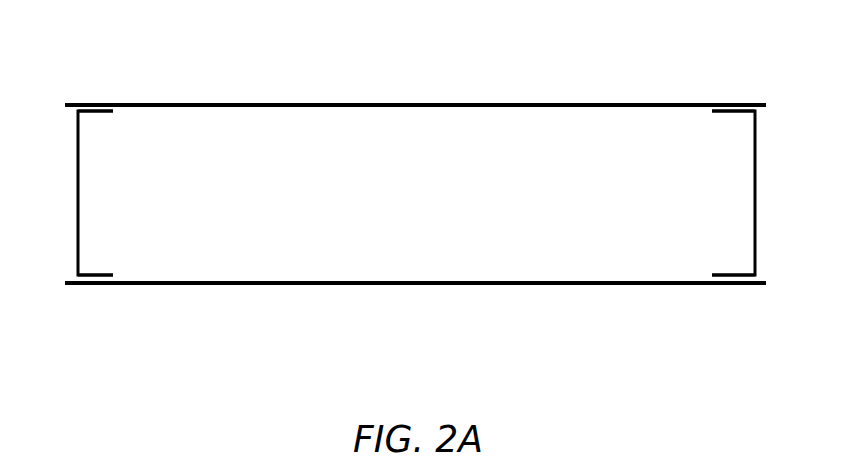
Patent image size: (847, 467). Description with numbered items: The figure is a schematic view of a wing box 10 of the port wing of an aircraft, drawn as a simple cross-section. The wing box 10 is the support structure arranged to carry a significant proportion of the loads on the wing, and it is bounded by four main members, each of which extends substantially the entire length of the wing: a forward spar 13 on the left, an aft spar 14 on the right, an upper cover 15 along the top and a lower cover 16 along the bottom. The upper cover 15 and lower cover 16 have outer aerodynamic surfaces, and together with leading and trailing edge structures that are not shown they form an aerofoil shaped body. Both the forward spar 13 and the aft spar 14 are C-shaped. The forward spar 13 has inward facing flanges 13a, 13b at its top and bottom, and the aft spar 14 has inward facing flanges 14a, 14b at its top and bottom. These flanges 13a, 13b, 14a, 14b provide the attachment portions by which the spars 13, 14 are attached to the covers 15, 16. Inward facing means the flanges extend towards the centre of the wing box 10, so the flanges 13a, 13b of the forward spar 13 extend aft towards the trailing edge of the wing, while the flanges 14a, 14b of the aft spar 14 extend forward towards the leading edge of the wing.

The wing box 10 is at (215, 303).
The forward spar 13 is at (77, 178).
The inward facing flange of forward spar 13a is at (105, 108).
The inward facing flange of forward spar 13b is at (97, 277).
The aft spar 14 is at (757, 186).
The inward facing flange of aft spar 14a is at (742, 108).
The inward facing flange of aft spar 14b is at (730, 278).
The upper cover 15 is at (433, 104).
The lower cover 16 is at (380, 285).